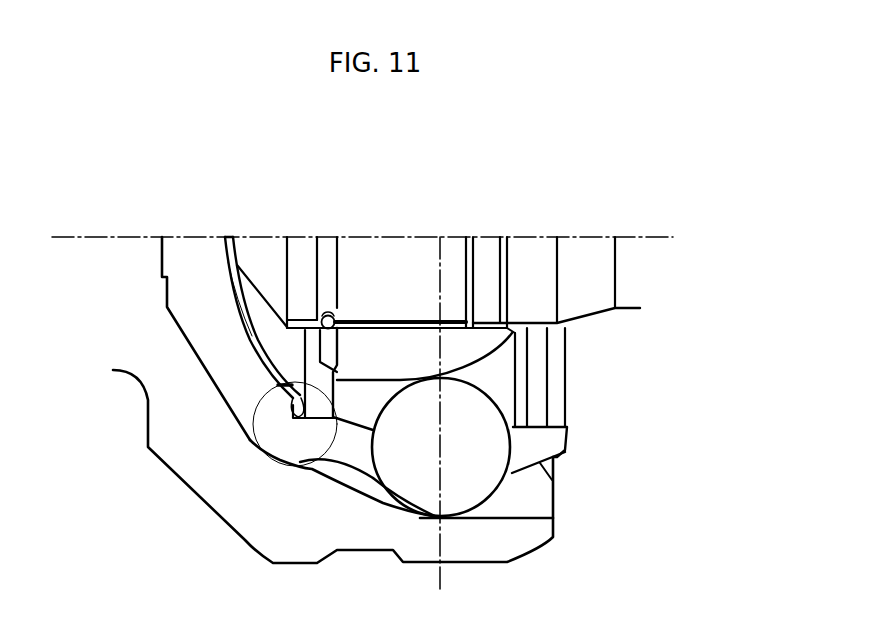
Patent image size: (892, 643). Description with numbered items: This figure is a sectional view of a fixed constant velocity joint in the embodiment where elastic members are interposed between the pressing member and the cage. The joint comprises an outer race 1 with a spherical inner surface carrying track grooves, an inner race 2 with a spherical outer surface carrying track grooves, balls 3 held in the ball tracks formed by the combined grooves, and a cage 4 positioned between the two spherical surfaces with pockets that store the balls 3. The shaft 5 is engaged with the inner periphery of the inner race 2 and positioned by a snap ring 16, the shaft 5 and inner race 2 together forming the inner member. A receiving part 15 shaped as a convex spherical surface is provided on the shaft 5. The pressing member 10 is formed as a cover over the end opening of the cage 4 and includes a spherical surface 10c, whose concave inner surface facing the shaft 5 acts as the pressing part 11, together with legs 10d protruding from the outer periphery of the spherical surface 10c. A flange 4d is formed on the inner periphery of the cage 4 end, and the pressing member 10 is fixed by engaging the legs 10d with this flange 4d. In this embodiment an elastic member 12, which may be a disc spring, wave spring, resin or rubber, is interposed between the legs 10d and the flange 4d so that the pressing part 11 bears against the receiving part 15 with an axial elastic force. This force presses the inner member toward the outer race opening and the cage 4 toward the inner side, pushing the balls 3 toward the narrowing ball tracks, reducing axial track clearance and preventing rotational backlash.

The outer race 1 is at (241, 539).
The inner race 2 is at (490, 357).
The balls 3 is at (467, 463).
The cage 4 is at (565, 452).
The flange 4d is at (283, 410).
The shaft 5 is at (588, 291).
The pressing member 10 is at (243, 322).
The spherical surface 10c is at (232, 298).
The legs 10d is at (337, 462).
The pressing part 11 is at (238, 262).
The elastic member 12 is at (287, 420).
The receiving part 15 is at (228, 262).
The snap ring 16 is at (330, 313).